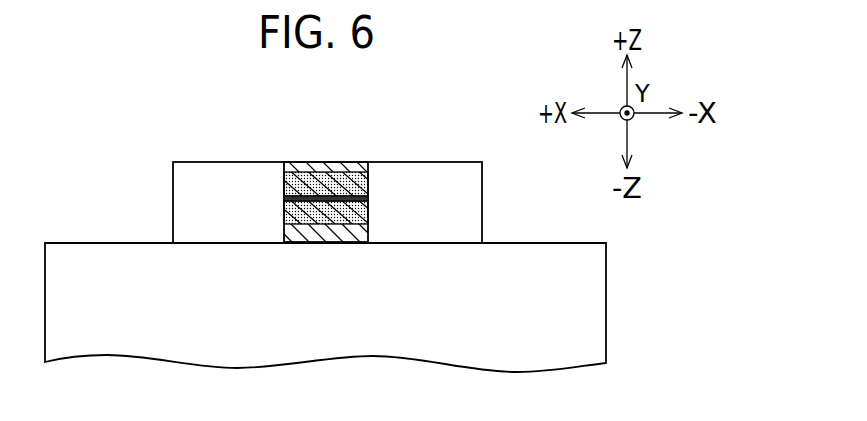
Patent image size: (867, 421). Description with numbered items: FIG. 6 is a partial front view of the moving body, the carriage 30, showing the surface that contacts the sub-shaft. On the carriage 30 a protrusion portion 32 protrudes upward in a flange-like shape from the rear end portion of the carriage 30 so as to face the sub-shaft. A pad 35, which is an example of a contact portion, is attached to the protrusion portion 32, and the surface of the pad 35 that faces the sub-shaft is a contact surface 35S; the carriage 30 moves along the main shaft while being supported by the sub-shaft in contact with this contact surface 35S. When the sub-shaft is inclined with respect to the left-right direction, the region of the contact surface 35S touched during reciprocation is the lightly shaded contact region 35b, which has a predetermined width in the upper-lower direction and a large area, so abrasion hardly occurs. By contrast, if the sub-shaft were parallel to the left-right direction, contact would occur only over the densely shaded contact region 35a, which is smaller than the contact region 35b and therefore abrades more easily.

The carriage 30 is at (538, 247).
The protrusion portion 32 is at (438, 170).
The pad 35 is at (326, 179).
The contact region 35a is at (283, 197).
The contact region 35b is at (368, 185).
The contact surface 35S is at (320, 163).